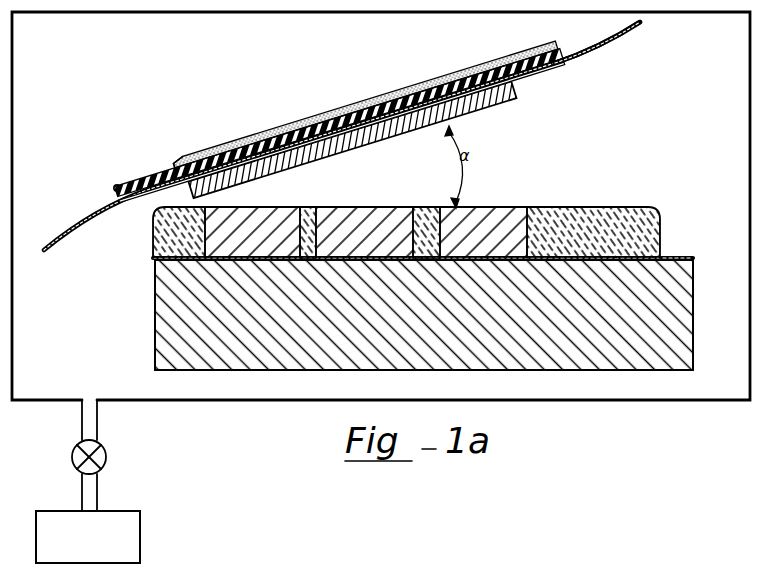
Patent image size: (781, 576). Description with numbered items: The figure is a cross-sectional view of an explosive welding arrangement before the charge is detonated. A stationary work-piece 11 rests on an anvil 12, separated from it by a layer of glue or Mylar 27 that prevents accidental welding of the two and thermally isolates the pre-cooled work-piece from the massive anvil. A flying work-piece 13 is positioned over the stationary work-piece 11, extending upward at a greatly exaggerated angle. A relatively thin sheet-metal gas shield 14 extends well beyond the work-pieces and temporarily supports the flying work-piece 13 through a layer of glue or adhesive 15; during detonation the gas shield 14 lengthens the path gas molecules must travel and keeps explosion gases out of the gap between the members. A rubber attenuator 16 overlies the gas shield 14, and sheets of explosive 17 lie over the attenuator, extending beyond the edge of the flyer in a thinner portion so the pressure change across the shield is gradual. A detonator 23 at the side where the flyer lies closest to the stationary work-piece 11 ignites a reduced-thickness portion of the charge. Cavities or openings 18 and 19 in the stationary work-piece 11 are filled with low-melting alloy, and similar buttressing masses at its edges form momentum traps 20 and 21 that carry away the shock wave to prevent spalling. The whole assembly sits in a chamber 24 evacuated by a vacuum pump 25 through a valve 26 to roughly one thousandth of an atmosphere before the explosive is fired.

The stationary work-piece 11 is at (386, 216).
The anvil 12 is at (154, 328).
The flying work-piece 13 is at (488, 108).
The gas shield 14 is at (74, 220).
The layer of glue or adhesive 15 is at (522, 82).
The rubber attenuator 16 is at (564, 62).
The sheet explosive 17 is at (328, 116).
The cavity or opening 18 is at (306, 207).
The cavity or opening 19 is at (426, 207).
The momentum trap 20 is at (152, 232).
The momentum trap 21 is at (607, 207).
The detonator 23 is at (114, 190).
The chamber 24 is at (207, 400).
The vacuum pump 25 is at (141, 520).
The valve 26 is at (105, 456).
The layer of glue or Mylar 27 is at (669, 257).